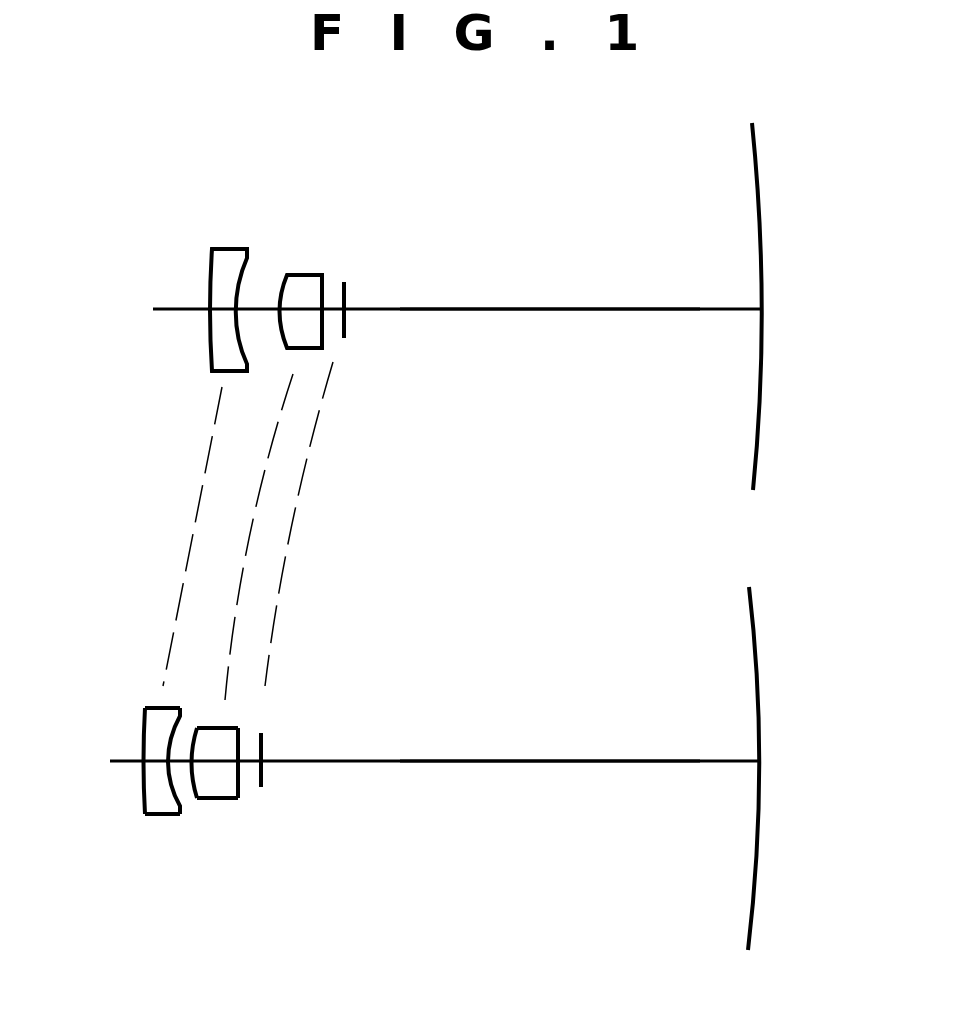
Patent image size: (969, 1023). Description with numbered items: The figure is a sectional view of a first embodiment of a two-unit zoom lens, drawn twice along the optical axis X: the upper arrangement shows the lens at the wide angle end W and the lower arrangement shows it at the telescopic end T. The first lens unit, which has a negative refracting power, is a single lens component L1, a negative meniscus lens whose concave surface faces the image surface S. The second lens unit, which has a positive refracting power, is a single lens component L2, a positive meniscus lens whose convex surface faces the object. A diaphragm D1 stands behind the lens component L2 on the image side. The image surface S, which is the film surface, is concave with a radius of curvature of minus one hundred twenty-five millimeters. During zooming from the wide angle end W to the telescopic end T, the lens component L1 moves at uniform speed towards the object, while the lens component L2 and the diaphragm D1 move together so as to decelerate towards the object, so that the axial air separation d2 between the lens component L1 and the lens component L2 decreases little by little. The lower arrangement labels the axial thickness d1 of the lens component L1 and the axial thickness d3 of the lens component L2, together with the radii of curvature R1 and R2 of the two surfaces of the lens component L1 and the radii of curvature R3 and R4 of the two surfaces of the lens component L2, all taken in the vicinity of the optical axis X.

The lens component L1 is at (229, 248).
The lens component L2 is at (305, 274).
The diaphragm D1 is at (347, 290).
The wide angle end W is at (419, 304).
The telescopic end T is at (393, 769).
The optical axis X is at (553, 309).
The image surface S is at (762, 221).
The axial thickness d1 is at (136, 759).
The axial air separation d2 is at (186, 778).
The axial thickness d3 is at (267, 770).
The radius of curvature R1 is at (145, 788).
The radius of curvature R2 is at (175, 797).
The radius of curvature R3 is at (196, 790).
The radius of curvature R4 is at (238, 780).